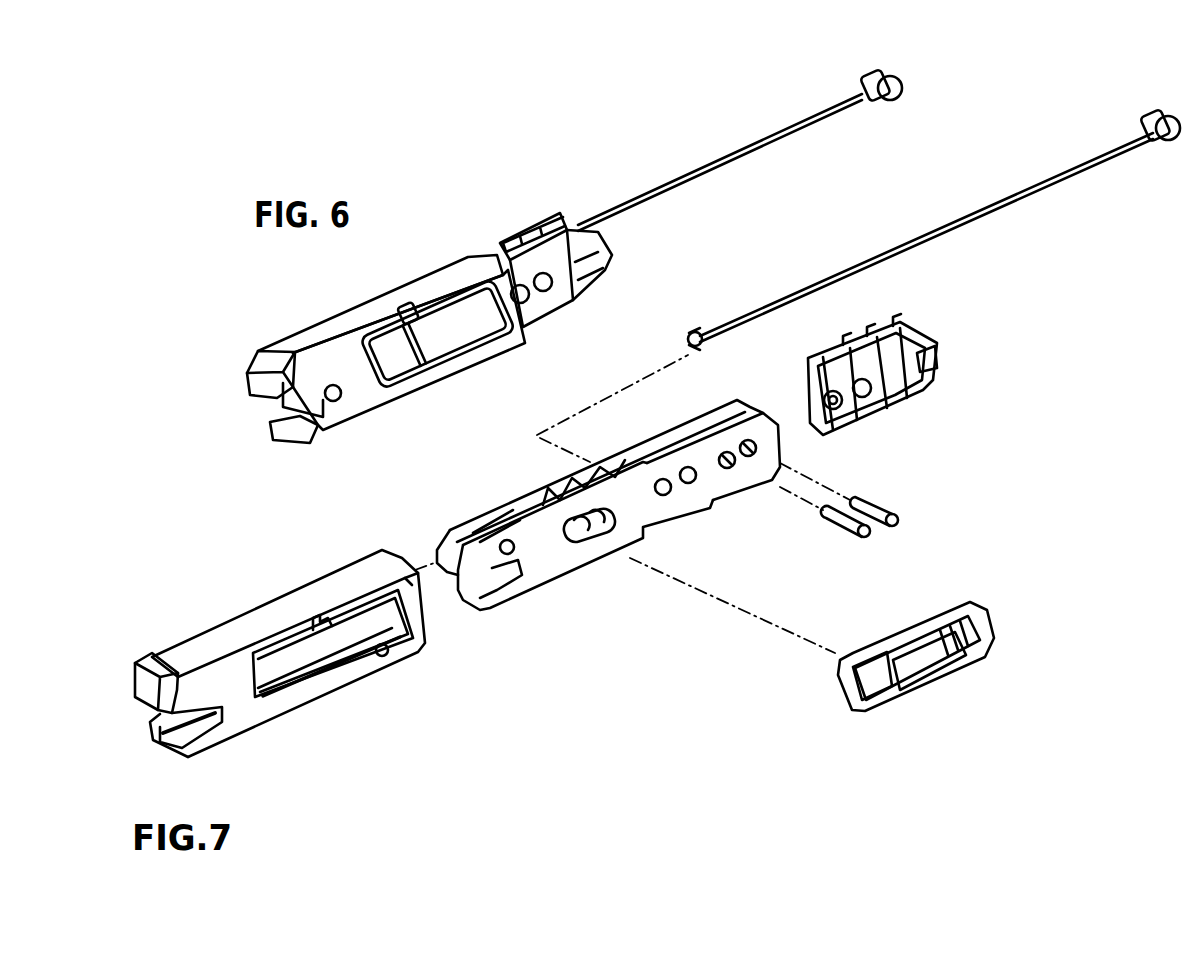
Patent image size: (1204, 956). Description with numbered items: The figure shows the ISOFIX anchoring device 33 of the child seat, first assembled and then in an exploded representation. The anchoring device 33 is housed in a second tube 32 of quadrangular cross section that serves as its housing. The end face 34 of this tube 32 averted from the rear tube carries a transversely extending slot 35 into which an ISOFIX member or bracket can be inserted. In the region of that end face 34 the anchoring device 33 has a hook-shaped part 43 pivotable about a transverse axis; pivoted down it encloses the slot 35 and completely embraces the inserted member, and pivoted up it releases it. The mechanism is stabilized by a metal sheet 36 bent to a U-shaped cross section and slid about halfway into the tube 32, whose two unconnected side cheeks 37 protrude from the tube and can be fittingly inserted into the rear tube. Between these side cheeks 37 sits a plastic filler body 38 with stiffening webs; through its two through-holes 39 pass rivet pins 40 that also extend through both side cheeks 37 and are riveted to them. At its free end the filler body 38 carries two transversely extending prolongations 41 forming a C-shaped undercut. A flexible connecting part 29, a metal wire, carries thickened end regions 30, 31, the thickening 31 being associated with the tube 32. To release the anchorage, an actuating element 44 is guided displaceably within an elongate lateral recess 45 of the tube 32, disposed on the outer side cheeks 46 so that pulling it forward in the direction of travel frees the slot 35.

In FIG. 6, the connecting part 29 is at (829, 112).
In FIG. 7, the connecting part 29 is at (1113, 157).
In FIG. 6, the thickened end region 30 is at (903, 86).
In FIG. 7, the thickened end region 30 is at (1168, 110).
In FIG. 7, the thickened end region 31 is at (700, 333).
In FIG. 6, the second tube 32 is at (300, 333).
In FIG. 7, the second tube 32 is at (266, 670).
In FIG. 7, the anchoring device 33 is at (608, 536).
In FIG. 7, the end face 34 is at (133, 687).
In FIG. 7, the slot 35 is at (152, 707).
In FIG. 7, the metal sheet 36 is at (590, 545).
In FIG. 7, the side cheeks 37 is at (733, 483).
In FIG. 6, the filler body 38 is at (590, 293).
In FIG. 7, the filler body 38 is at (906, 398).
In FIG. 7, the through-holes 39 is at (867, 410).
In FIG. 7, the rivet pin 40 is at (857, 520).
In FIG. 7, the prolongations 41 is at (937, 345).
In FIG. 6, the hook-shaped part 43 is at (306, 402).
In FIG. 6, the actuating element 44 is at (459, 344).
In FIG. 7, the actuating element 44 is at (917, 660).
In FIG. 7, the recess 45 is at (373, 660).
In FIG. 7, the outer side cheeks 46 is at (247, 713).